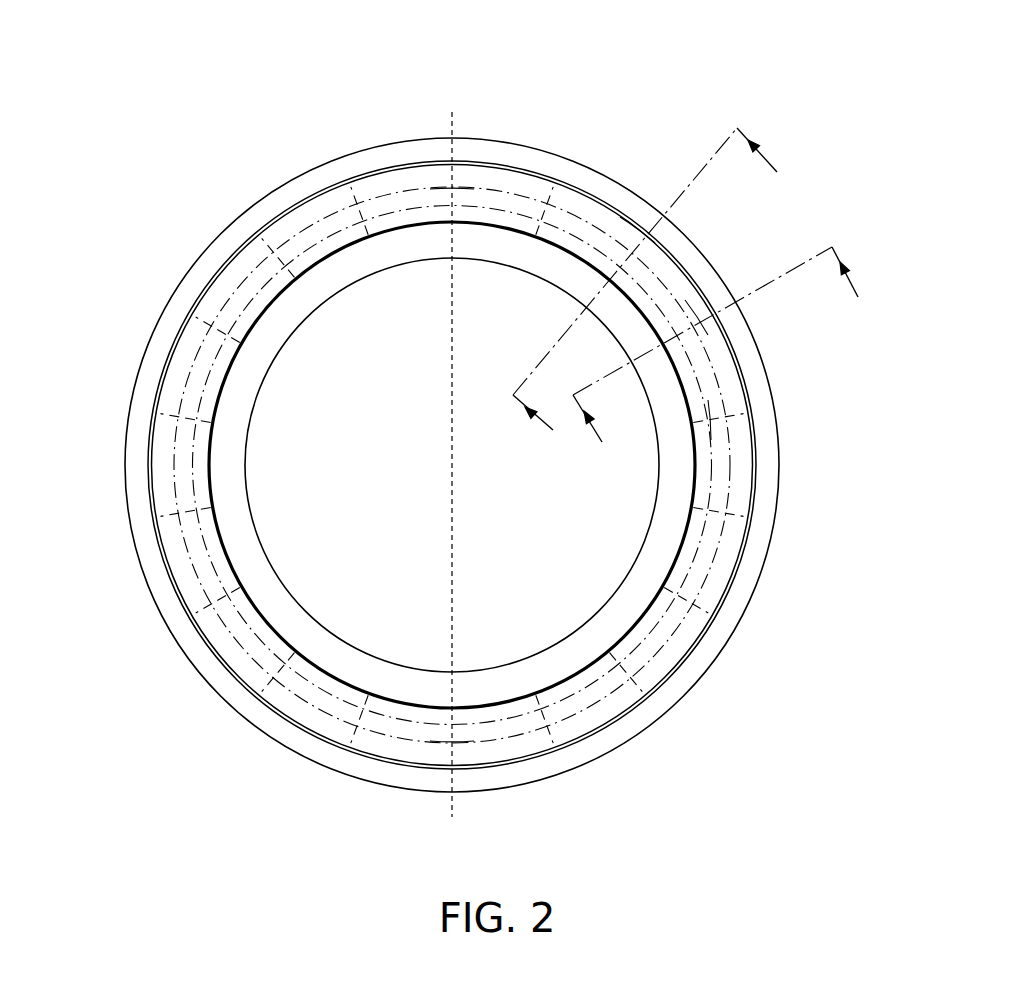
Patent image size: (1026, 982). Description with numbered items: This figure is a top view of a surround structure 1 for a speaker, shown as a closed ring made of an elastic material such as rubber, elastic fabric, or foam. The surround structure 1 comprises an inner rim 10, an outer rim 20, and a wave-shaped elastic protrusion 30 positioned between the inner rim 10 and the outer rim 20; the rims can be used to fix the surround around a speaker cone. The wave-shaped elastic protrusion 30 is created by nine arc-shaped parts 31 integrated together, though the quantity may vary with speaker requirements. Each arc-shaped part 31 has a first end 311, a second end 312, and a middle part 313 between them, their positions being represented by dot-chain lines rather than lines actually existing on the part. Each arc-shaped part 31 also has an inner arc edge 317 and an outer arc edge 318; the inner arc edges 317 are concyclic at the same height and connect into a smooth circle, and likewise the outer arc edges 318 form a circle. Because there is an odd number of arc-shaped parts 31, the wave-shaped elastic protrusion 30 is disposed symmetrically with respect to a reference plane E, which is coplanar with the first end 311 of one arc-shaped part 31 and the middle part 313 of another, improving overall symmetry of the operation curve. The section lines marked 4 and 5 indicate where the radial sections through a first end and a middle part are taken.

The surround structure 1 is at (87, 122).
The inner rim 10 is at (652, 572).
The outer rim 20 is at (705, 662).
The wave-shaped elastic protrusion 30 is at (718, 395).
The arc-shaped part 31 is at (463, 468).
The first end 311 is at (450, 192).
The second end 312 is at (720, 417).
The middle part 313 is at (702, 320).
The inner arc edge 317 is at (695, 470).
The outer arc edge 318 is at (742, 562).
The reference plane E is at (453, 148).
The section line 4- 4 is at (656, 291).
The section line 5- 5 is at (727, 361).